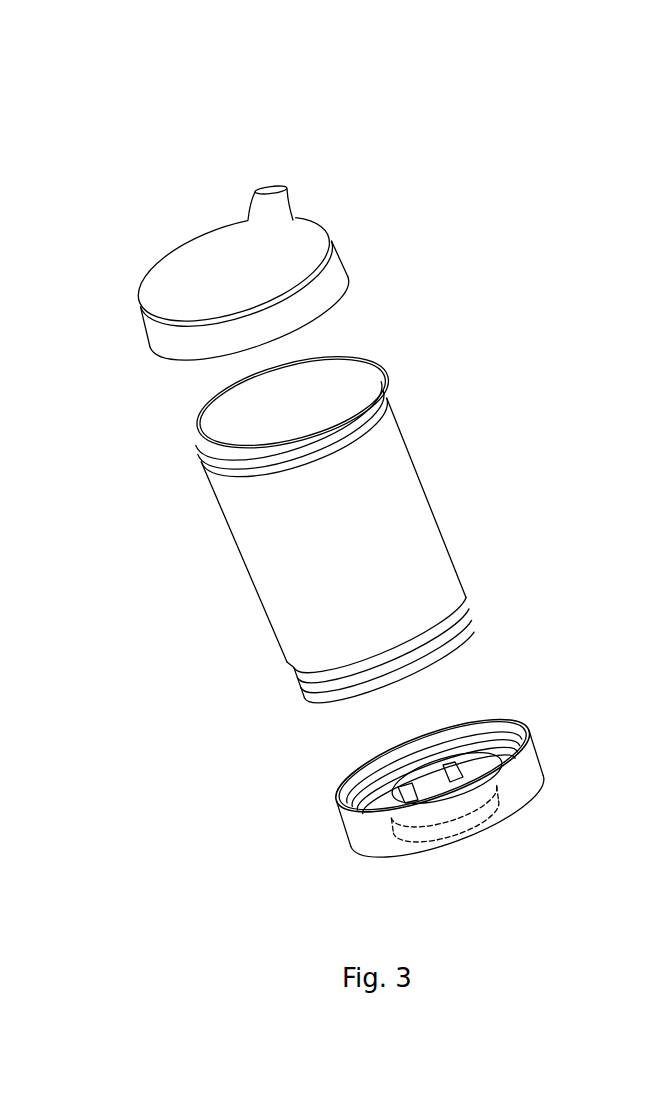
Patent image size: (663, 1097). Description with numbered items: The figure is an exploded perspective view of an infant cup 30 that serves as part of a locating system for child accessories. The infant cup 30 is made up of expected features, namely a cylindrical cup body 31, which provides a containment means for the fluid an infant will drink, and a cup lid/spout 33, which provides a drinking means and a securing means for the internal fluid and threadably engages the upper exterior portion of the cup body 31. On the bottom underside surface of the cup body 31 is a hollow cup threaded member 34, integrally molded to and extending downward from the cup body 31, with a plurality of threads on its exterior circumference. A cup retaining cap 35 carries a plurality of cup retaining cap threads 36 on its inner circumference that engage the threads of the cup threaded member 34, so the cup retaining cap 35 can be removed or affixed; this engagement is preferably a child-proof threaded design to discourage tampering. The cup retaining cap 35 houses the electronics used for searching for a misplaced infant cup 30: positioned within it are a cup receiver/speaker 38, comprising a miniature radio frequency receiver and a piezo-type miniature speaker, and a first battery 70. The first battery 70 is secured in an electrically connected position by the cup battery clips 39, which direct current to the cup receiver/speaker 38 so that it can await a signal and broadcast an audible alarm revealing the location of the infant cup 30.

The infant cup 30 is at (109, 106).
The cup body 31 is at (405, 528).
The cup lid/spout 33 is at (303, 237).
The cup threaded member 34 is at (468, 623).
The cup retaining cap 35 is at (527, 760).
The cup retaining cap threads 36 is at (377, 800).
The cup receiver/speaker 38 is at (497, 808).
The cup battery clips 39 is at (452, 766).
The first battery 70 is at (402, 803).